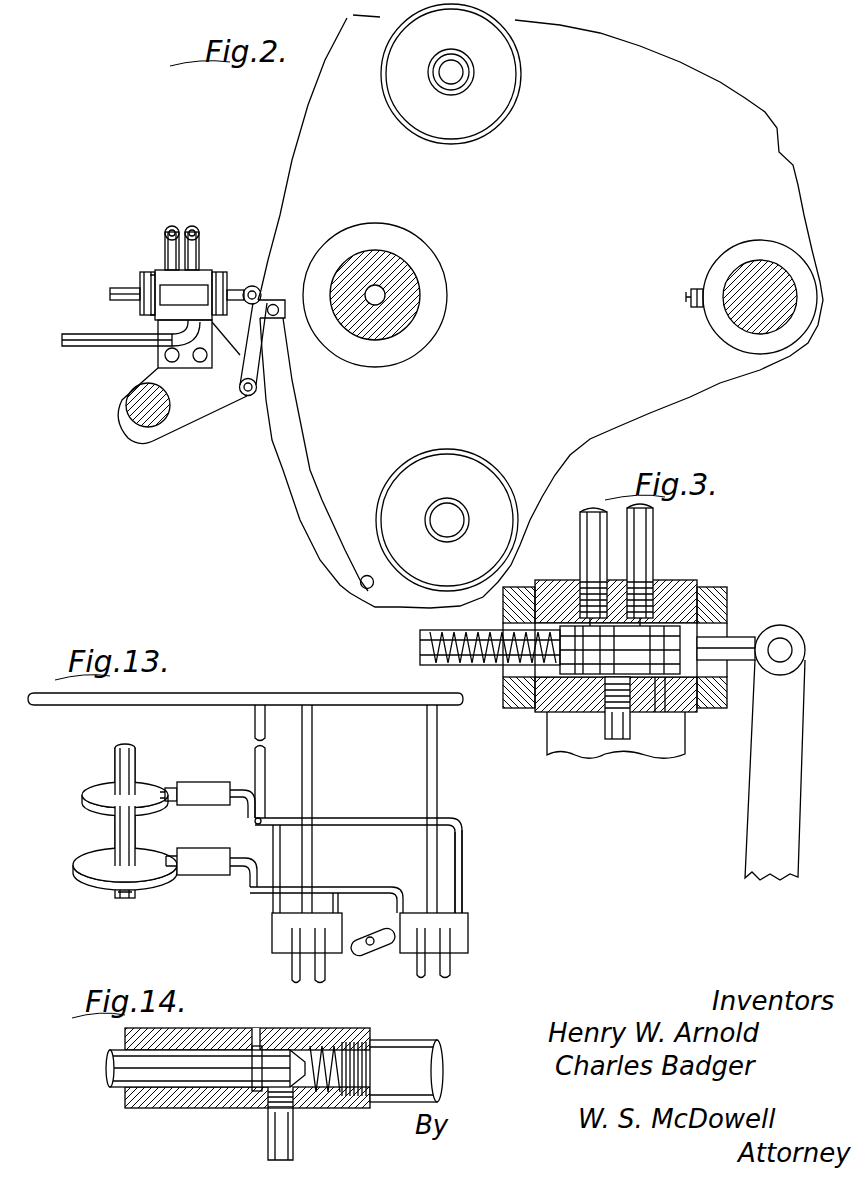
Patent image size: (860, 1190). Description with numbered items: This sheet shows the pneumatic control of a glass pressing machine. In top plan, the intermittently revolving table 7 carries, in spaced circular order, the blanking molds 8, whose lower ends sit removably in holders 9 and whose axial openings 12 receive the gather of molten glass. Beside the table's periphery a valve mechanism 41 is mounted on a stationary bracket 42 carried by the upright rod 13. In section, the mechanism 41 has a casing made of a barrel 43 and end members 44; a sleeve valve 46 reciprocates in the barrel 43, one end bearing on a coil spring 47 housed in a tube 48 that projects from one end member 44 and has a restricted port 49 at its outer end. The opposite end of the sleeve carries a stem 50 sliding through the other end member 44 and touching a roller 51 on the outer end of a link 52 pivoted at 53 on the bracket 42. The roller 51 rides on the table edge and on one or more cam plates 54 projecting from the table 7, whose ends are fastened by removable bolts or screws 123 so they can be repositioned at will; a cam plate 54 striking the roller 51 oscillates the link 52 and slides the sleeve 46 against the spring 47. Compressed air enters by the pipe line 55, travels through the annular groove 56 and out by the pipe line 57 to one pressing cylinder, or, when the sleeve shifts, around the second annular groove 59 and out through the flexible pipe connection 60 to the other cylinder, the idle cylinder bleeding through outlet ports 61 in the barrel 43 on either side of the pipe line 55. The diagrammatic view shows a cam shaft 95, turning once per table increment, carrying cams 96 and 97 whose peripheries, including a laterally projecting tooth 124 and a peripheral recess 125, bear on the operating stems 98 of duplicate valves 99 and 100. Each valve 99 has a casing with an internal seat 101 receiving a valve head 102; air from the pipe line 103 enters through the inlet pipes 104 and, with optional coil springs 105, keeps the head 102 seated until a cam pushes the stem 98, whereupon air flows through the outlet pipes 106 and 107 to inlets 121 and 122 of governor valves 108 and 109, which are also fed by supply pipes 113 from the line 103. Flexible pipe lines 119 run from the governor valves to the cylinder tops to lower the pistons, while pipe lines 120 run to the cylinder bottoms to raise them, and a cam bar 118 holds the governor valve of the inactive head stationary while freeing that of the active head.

In FIG. 2, the table 7 is at (290, 133).
In FIG. 2, the blanking molds 8 is at (488, 108).
In FIG. 2, the holders 9 is at (485, 133).
In FIG. 2, the axial openings 12 is at (462, 70).
In FIG. 2, the upright rod 13 is at (138, 428).
In FIG. 2, the valve mechanism 41 is at (212, 262).
In FIG. 2, the stationary bracket 42 is at (186, 416).
In FIG. 2, the barrel 43 is at (157, 272).
In FIG. 3, the barrel 43 is at (673, 582).
In FIG. 2, the end members 44 is at (140, 272).
In FIG. 3, the end members 44 is at (515, 590).
In FIG. 3, the sleeve valve 46 is at (620, 650).
In FIG. 3, the coil spring 47 is at (492, 668).
In FIG. 2, the tube 48 is at (121, 300).
In FIG. 3, the tube 48 is at (420, 638).
In FIG. 3, the restricted port 49 is at (420, 656).
In FIG. 2, the stem 50 is at (250, 287).
In FIG. 3, the stem 50 is at (730, 641).
In FIG. 2, the roller 51 is at (262, 293).
In FIG. 3, the roller 51 is at (783, 627).
In FIG. 2, the link 52 is at (242, 378).
In FIG. 3, the link 52 is at (775, 770).
In FIG. 2, the pivot 53 is at (240, 394).
In FIG. 2, the cam plates 54 is at (312, 463).
In FIG. 2, the pipe line 55 is at (95, 346).
In FIG. 3, the pipe line 55 is at (605, 727).
In FIG. 3, the annular groove 56 is at (612, 598).
In FIG. 2, the pipe line 57 is at (172, 248).
In FIG. 3, the pipe line 57 is at (580, 542).
In FIG. 3, the second annular groove 59 is at (655, 705).
In FIG. 2, the flexible pipe connection 60 is at (192, 248).
In FIG. 3, the flexible pipe connection 60 is at (653, 540).
In FIG. 3, the outlet ports 61 is at (550, 712).
In FIG. 13, the cam shaft 95 is at (115, 762).
In FIG. 13, the cam 96 is at (146, 783).
In FIG. 13, the cam 97 is at (148, 890).
In FIG. 13, the operating stems 98 is at (162, 801).
In FIG. 14, the operating stems 98 is at (112, 1082).
In FIG. 13, the valve 99 is at (212, 783).
In FIG. 14, the valve 99 is at (158, 1108).
In FIG. 13, the valve 100 is at (211, 848).
In FIG. 14, the internal seat 101 is at (283, 1030).
In FIG. 14, the valve head 102 is at (293, 1112).
In FIG. 13, the pipe line 103 is at (314, 694).
In FIG. 13, the inlet pipes 104 is at (262, 773).
In FIG. 14, the inlet pipes 104 is at (424, 1046).
In FIG. 14, the coil springs 105 is at (338, 1100).
In FIG. 13, the outlet pipe 106 is at (374, 818).
In FIG. 14, the outlet pipe 106 is at (293, 1145).
In FIG. 13, the outlet pipe 107 is at (356, 887).
In FIG. 13, the governor valve 108 is at (332, 950).
In FIG. 13, the governor valve 109 is at (443, 931).
In FIG. 13, the supply pipes 113 is at (312, 773).
In FIG. 13, the cam bar 118 is at (366, 952).
In FIG. 13, the flexible pipe lines 119 is at (292, 958).
In FIG. 13, the pipe lines 120 is at (303, 978).
In FIG. 13, the inlet 121 is at (273, 900).
In FIG. 13, the inlet 122 is at (340, 905).
In FIG. 2, the removable bolts or screws 123 is at (392, 588).
In FIG. 13, the laterally projecting tooth 124 is at (169, 785).
In FIG. 13, the peripheral recess 125 is at (152, 850).